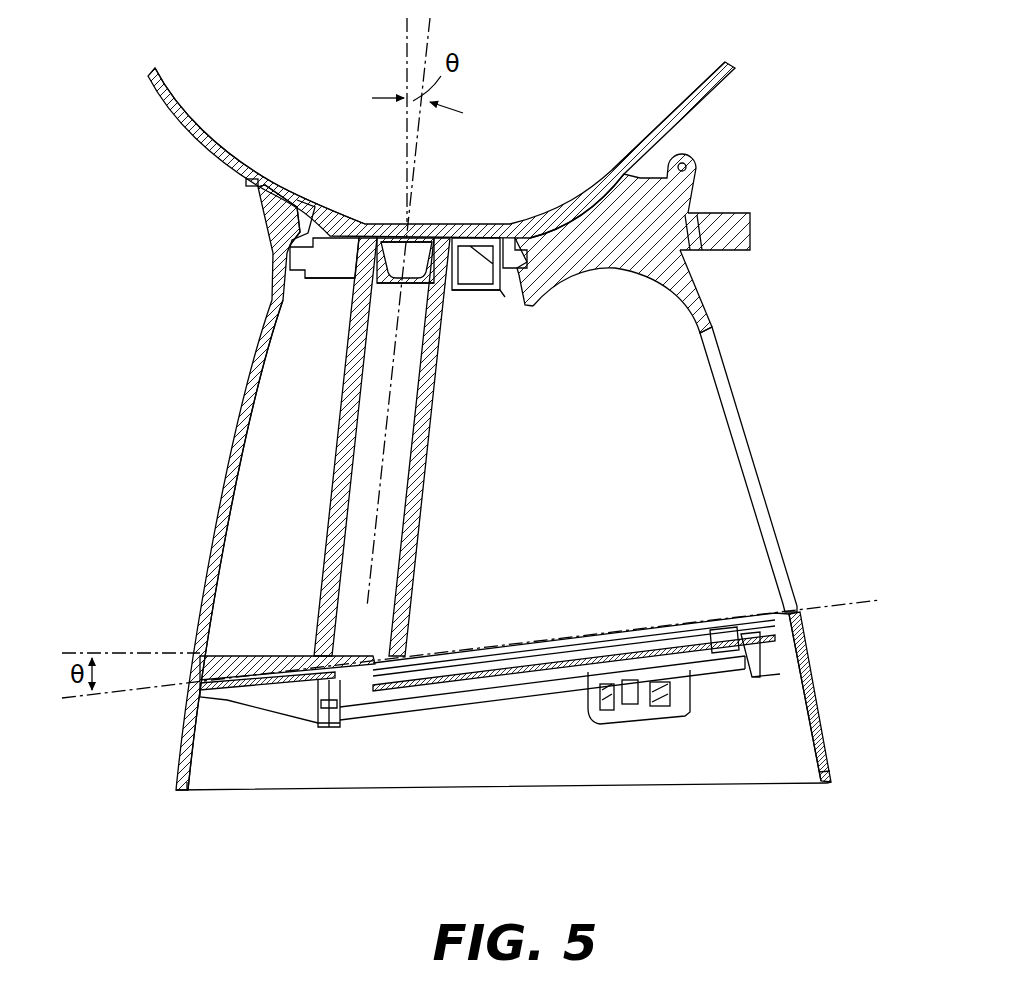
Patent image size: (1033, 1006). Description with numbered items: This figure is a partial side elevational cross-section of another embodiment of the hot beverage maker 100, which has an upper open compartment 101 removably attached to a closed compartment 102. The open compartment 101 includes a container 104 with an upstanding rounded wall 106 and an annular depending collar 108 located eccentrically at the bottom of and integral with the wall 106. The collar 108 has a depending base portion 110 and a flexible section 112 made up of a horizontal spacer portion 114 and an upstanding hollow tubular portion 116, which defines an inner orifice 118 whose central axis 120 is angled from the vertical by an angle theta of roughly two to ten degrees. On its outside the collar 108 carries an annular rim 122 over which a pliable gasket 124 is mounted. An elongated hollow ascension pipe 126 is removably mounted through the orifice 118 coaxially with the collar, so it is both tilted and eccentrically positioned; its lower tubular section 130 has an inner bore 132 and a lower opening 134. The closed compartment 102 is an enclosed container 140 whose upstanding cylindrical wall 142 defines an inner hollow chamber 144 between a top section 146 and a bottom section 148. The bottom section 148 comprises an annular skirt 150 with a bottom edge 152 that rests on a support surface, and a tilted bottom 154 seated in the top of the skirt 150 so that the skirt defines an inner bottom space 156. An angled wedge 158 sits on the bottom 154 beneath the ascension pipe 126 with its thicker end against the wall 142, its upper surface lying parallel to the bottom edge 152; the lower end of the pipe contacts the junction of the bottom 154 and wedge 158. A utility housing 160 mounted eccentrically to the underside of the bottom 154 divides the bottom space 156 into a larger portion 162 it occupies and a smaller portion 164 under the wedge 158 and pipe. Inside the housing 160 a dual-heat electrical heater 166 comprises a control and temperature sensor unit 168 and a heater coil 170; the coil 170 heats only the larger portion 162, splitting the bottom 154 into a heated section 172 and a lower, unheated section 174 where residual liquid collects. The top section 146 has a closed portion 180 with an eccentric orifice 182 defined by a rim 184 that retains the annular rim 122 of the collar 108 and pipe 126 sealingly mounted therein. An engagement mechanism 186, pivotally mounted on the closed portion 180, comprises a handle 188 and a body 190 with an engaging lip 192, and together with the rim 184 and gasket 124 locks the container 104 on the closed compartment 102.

The hot beverage maker 100 is at (842, 393).
The upper open compartment 101 is at (743, 104).
The closed compartment 102 is at (721, 342).
The container 104 is at (704, 127).
The upstanding rounded wall 106 is at (690, 155).
The annular depending collar 108 is at (483, 296).
The depending base portion 110 is at (358, 220).
The flexible section 112 is at (314, 283).
The horizontal spacer portion 114 is at (336, 279).
The tubular portion 116 is at (466, 257).
The inner orifice 118 is at (360, 230).
The central axis 120 is at (436, 25).
The annular rim 122 is at (273, 214).
The pliable gasket 124 is at (280, 213).
The ascension pipe 126 is at (438, 444).
The lower tubular section 130 is at (413, 500).
The inner bore 132 is at (386, 571).
The lower opening 134 is at (370, 665).
The enclosed container 140 is at (231, 462).
The upstanding cylindrical wall 142 is at (222, 500).
The inner hollow chamber 144 is at (260, 515).
The top section 146 is at (701, 273).
The bottom section 148 is at (829, 693).
The annular skirt 150 is at (820, 770).
The bottom edge 152 is at (828, 784).
The tilted bottom 154 is at (185, 692).
The inner bottom space 156 is at (495, 778).
The angled wedge 158 is at (272, 655).
The utility housing 160 is at (751, 679).
The larger portion 162 is at (487, 715).
The smaller portion 164 is at (289, 715).
The dual-heat electrical heater 166 is at (717, 638).
The control and temperature sensor unit 168 is at (632, 714).
The heater coil 170 is at (493, 665).
The heated section 172 is at (558, 637).
The unheated section 174 is at (263, 697).
The closed portion 180 is at (588, 220).
The orifice 182 is at (514, 258).
The rim 184 is at (302, 214).
The engagement mechanism 186 is at (586, 278).
The handle 188 is at (752, 232).
The body 190 is at (616, 172).
The engaging lip 192 is at (530, 236).